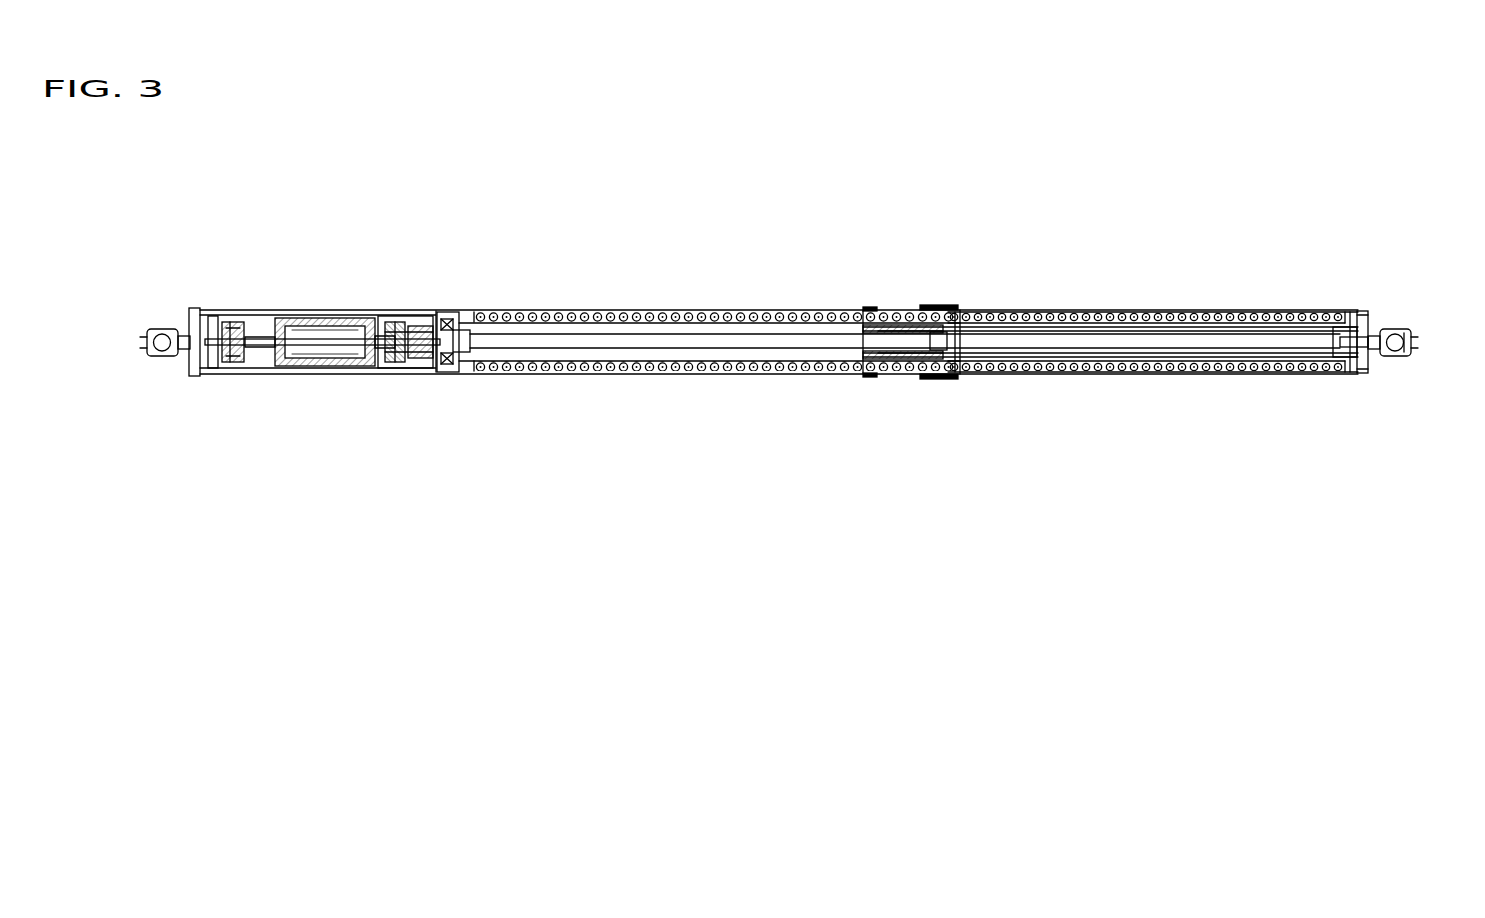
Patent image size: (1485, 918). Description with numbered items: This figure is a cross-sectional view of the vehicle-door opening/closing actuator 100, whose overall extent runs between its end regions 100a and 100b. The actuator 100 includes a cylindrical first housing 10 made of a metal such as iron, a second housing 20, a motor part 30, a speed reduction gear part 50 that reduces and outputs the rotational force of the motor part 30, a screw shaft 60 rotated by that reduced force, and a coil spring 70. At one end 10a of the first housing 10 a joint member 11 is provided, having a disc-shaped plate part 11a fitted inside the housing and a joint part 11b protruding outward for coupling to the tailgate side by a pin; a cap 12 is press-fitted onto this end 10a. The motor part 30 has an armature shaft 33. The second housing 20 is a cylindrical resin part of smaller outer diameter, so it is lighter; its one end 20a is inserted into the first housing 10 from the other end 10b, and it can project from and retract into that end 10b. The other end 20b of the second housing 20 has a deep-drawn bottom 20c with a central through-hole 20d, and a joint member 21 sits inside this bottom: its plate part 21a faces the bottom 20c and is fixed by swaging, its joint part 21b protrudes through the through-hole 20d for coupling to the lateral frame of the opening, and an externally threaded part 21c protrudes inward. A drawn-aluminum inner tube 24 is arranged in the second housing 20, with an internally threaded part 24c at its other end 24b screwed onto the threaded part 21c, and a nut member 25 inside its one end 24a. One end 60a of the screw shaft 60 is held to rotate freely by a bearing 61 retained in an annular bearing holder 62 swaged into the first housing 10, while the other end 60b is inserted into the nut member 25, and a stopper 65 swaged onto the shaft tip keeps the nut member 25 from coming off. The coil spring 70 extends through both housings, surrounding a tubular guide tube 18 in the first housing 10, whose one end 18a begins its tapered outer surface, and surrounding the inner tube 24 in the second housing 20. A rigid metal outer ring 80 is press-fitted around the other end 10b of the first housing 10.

The actuator 100 is at (920, 215).
The first end of actuator 100a is at (1412, 350).
The second end of actuator 100b is at (150, 356).
The first housing 10 is at (590, 298).
The one end of the first housing 10a is at (212, 373).
The other end of the first housing 10b is at (956, 374).
The joint member 11 is at (167, 328).
The plate part 11a is at (190, 368).
The joint part 11b is at (140, 332).
The cap 12 is at (208, 310).
The guide tube 18 is at (668, 320).
The one end of the guide tube 18a is at (485, 372).
The second housing 20 is at (1135, 298).
The one end of the second housing 20a is at (873, 374).
The other end of the second housing 20b is at (1353, 373).
The bottom 20c is at (1377, 310).
The through-hole 20d is at (1378, 350).
The joint member 21 is at (1395, 318).
The plate part 21a is at (1362, 312).
The joint part 21b is at (1412, 337).
The externally threaded part 21c is at (1340, 349).
The inner tube 24 is at (1190, 310).
The one end of the inner tube 24a is at (873, 327).
The other end of the inner tube 24b is at (1345, 373).
The internally threaded part 24c is at (1340, 340).
The nut member 25 is at (900, 327).
The motor part 30 is at (325, 298).
The shaft 33 is at (343, 344).
The speed reduction gear part 50 is at (410, 298).
The screw shaft 60 is at (757, 340).
The one end of the screw shaft 60a is at (485, 310).
The other end of the screw shaft 60b is at (937, 331).
The bearing 61 is at (447, 372).
The bearing holder 62 is at (447, 310).
The stopper 65 is at (938, 374).
The coil spring 70 is at (1030, 310).
The outer ring 80 is at (955, 310).